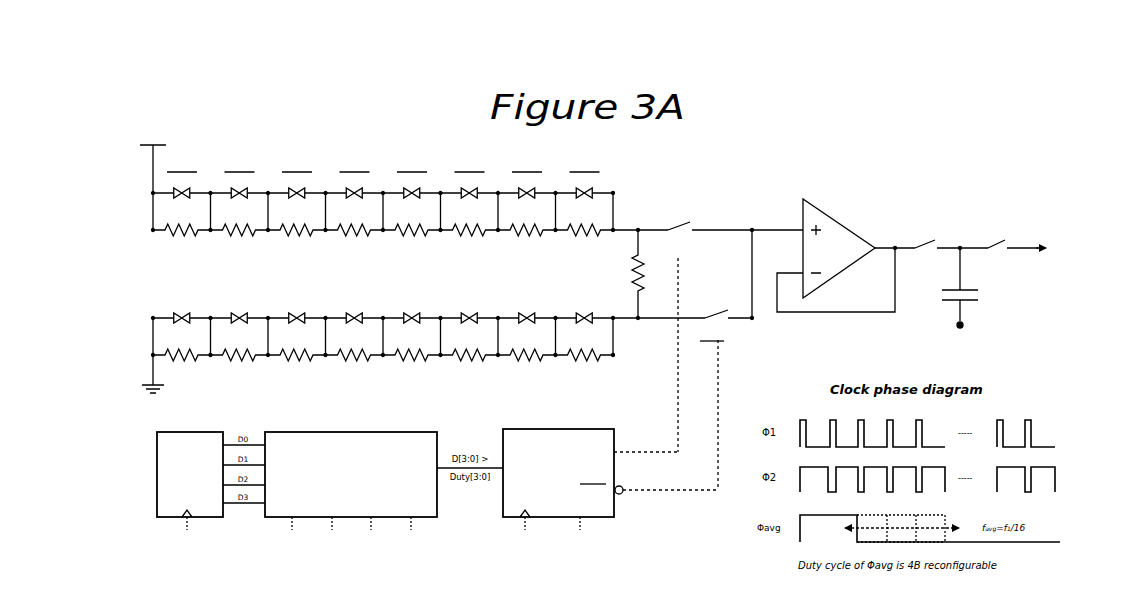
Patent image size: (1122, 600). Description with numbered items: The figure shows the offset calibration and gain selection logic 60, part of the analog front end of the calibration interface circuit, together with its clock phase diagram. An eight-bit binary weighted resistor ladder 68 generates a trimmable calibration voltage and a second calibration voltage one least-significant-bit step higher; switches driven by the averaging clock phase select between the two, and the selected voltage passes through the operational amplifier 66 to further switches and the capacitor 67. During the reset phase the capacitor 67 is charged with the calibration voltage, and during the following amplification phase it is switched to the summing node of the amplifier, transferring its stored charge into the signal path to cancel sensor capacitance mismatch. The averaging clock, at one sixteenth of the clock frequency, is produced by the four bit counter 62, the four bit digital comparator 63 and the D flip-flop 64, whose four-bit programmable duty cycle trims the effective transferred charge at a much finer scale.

The offset calibration & gain selection logic 60 is at (858, 154).
The four bit counter 62 is at (190, 437).
The four bit digital comparator 63 is at (343, 437).
The D flip-flop 64 is at (545, 437).
The operational amplifier 66 is at (832, 236).
The capacitor 67 is at (980, 306).
The resistor ladder 68 is at (147, 267).